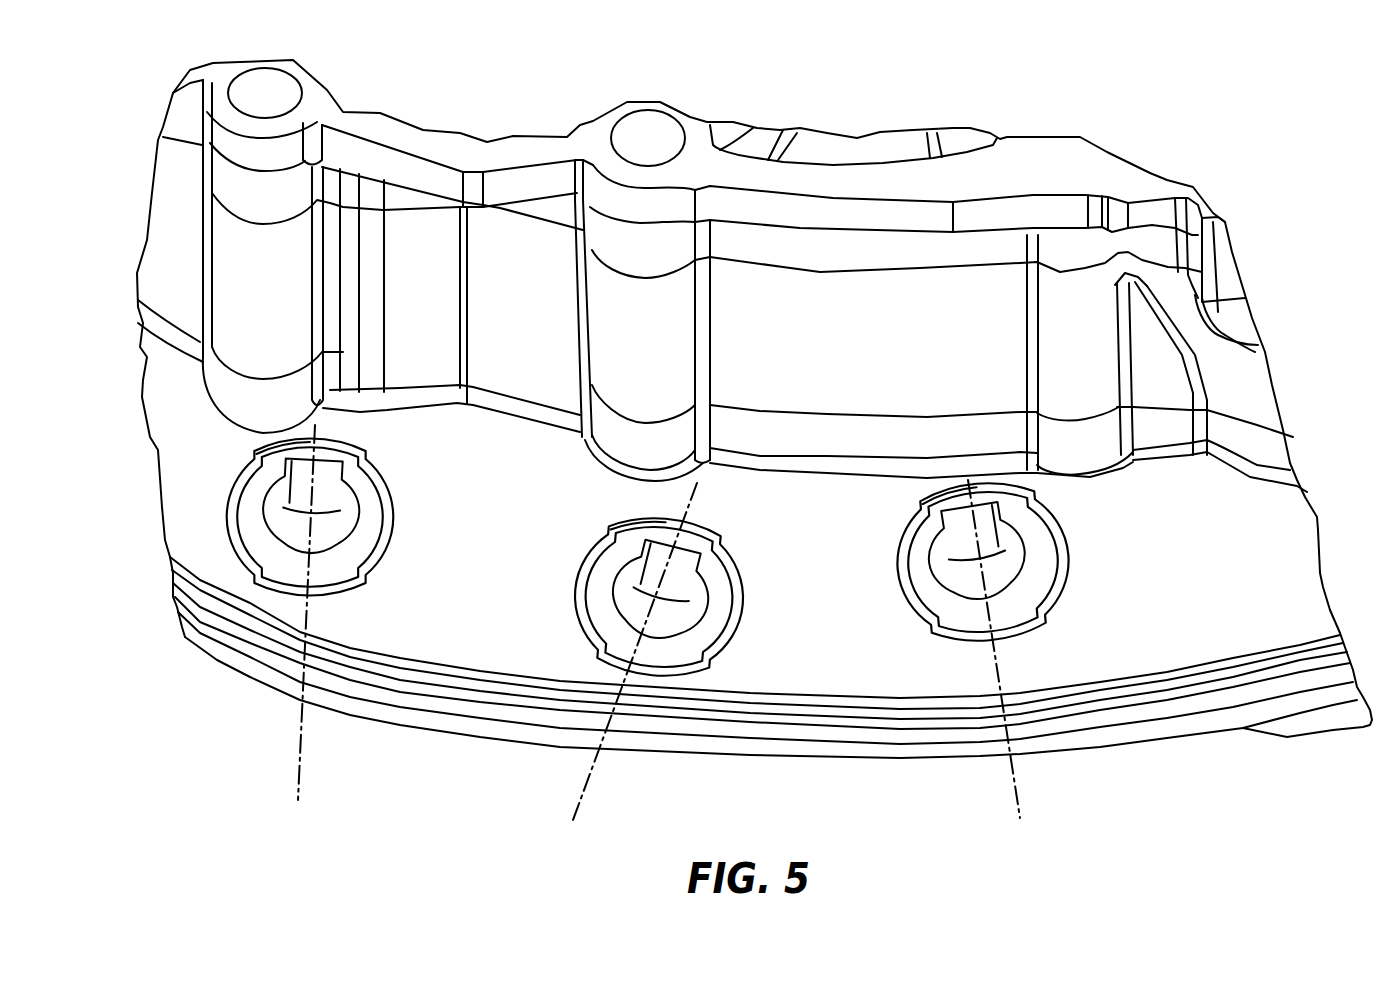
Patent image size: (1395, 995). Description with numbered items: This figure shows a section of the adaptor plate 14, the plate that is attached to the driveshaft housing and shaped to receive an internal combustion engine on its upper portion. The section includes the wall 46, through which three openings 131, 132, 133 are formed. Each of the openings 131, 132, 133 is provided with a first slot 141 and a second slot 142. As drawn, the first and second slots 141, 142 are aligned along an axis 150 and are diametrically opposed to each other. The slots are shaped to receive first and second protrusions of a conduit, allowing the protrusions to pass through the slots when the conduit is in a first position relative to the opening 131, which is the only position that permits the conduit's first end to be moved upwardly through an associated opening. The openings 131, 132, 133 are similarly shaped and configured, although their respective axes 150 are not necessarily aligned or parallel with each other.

The adaptor plate 14 is at (1015, 158).
The wall 46 is at (890, 673).
The opening 131 is at (273, 508).
The opening 132 is at (703, 583).
The opening 133 is at (1013, 550).
The first slot 141 is at (330, 553).
The second slot 142 is at (322, 477).
The axis 150 is at (302, 792).